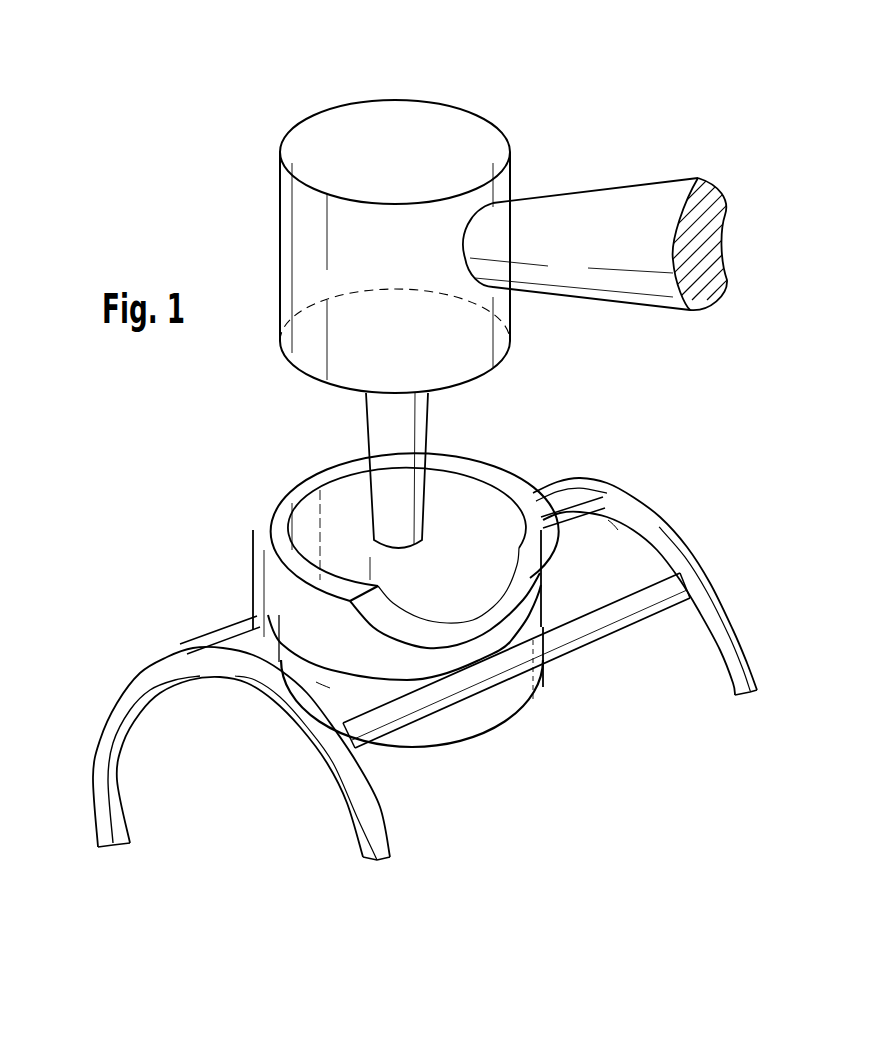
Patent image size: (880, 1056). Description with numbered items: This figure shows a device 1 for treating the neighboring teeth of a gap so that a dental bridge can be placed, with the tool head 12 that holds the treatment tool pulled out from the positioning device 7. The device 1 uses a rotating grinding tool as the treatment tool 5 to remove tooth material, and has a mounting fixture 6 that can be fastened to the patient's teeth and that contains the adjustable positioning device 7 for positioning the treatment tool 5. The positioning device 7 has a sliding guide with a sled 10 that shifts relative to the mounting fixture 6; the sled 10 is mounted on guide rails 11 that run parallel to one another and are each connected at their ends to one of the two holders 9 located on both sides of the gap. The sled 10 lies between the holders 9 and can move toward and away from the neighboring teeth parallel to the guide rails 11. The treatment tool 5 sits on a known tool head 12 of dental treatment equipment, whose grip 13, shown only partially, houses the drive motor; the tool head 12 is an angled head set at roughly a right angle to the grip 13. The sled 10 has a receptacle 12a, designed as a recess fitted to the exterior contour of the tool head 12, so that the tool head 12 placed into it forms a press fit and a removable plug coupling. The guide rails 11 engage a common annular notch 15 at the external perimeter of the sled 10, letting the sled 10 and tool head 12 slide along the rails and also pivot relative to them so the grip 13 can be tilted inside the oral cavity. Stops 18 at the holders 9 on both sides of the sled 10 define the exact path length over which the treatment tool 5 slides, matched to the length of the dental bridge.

The device 1 is at (425, 685).
The treatment tool 5 is at (400, 437).
The mounting fixture 6 is at (397, 823).
The positioning device 7 is at (524, 723).
The holders 9 is at (665, 523).
The sled 10 is at (381, 543).
The guide rails 11 is at (247, 627).
The tool head 12 is at (403, 127).
The receptacle 12a is at (343, 500).
The grip 13 is at (633, 205).
The annular notch 15 is at (288, 628).
The stops 18 is at (608, 520).